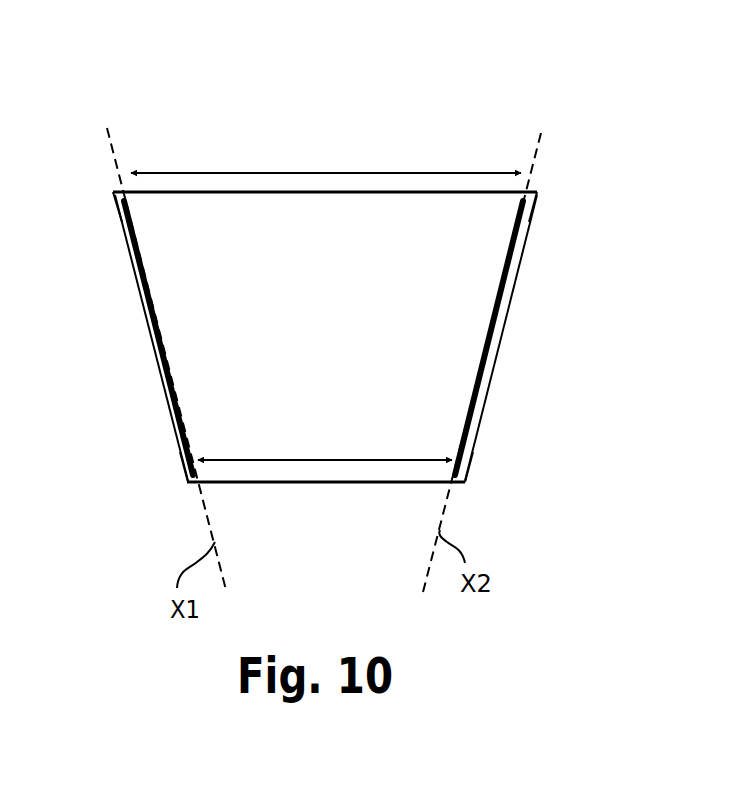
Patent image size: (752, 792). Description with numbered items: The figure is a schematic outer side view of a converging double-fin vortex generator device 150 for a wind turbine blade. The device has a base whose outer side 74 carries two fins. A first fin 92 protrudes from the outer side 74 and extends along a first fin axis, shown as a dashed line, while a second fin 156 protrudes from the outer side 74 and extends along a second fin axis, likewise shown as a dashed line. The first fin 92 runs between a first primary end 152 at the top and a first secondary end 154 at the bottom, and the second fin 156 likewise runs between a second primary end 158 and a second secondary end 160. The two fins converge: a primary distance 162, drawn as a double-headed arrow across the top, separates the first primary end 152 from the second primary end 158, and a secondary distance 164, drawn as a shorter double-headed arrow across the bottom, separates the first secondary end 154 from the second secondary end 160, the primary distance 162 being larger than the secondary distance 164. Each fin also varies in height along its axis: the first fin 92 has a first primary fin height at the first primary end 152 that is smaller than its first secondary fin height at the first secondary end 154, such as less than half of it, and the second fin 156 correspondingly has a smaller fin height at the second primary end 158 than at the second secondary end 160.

The vortex generator device 150 is at (215, 98).
The outer side 74 is at (400, 222).
The first fin 92 is at (157, 293).
The second fin 156 is at (492, 305).
The first primary end 152 is at (115, 200).
The first secondary end 154 is at (188, 480).
The second primary end 158 is at (535, 203).
The second secondary end 160 is at (467, 480).
The primary distance 162 is at (308, 173).
The secondary distance 164 is at (338, 458).